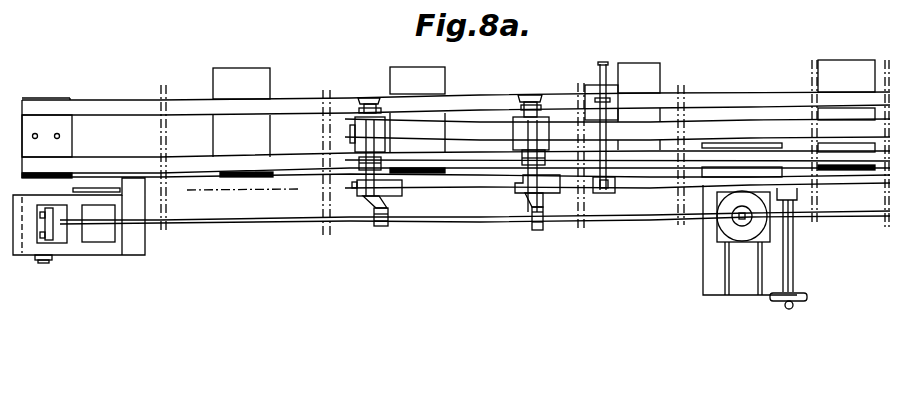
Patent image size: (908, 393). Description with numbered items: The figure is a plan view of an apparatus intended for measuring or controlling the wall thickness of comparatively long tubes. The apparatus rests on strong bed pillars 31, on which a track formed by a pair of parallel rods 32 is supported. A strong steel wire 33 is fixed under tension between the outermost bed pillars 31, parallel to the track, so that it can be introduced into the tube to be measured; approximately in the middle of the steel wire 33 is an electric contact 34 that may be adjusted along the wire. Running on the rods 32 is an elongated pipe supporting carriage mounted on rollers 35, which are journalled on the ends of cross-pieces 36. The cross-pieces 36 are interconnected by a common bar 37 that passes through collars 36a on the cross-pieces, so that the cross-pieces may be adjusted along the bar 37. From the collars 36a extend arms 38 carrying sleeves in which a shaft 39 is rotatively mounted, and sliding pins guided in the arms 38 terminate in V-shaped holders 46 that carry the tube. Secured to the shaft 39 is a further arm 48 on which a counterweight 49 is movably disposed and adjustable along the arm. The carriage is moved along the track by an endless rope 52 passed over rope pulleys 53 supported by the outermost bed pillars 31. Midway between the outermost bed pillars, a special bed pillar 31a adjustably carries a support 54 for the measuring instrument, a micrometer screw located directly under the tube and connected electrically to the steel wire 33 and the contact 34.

The bed pillar 31 is at (50, 100).
The special bed pillar 31a is at (748, 142).
The parallel rods 32 is at (173, 158).
The steel wire 33 is at (308, 222).
The electric contact 34 is at (737, 217).
The rollers 35 is at (372, 98).
The cross-pieces 36 is at (338, 108).
The collars 36a is at (360, 137).
The common bar 37 is at (497, 137).
The arms 38 is at (384, 140).
The shaft 39 is at (478, 190).
The V-shaped holders 46 is at (378, 227).
The further arm 48 is at (618, 193).
The counterweight 49 is at (595, 84).
The endless rope 52 is at (183, 192).
The rope pulleys 53 is at (88, 190).
The support 54 is at (725, 238).